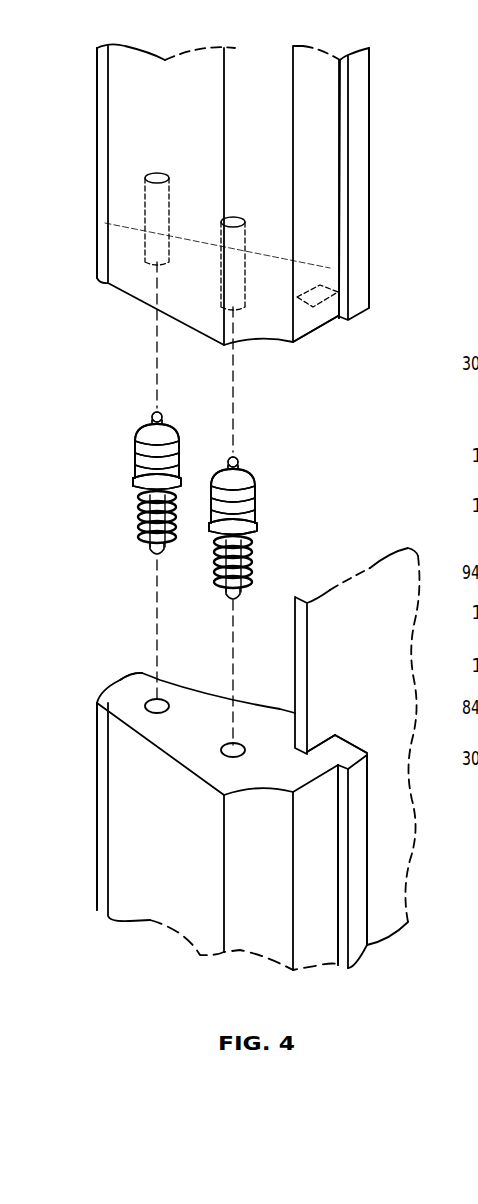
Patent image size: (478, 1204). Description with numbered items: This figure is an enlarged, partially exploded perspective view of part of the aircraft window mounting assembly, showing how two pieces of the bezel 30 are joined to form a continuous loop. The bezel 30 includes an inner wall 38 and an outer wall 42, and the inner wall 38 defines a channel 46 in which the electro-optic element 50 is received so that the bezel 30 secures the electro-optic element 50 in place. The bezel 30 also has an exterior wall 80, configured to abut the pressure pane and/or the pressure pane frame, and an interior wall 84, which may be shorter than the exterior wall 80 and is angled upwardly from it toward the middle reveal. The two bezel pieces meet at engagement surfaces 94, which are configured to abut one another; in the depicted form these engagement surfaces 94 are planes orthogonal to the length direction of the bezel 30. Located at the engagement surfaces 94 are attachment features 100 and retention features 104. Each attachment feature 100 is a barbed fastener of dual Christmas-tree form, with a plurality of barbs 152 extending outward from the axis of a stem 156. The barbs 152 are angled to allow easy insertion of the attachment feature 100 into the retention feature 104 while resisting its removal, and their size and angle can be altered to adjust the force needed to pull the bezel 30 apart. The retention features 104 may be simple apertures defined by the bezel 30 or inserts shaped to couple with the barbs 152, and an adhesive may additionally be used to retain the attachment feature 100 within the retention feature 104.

The bezel 30 is at (95, 157).
The outer wall 42 is at (148, 110).
The exterior wall 80 is at (315, 128).
The engagement surfaces 94 is at (315, 333).
The inner wall 38 is at (260, 255).
The channel 46 is at (317, 290).
The interior wall 84 is at (150, 238).
The retention feature 104 is at (232, 288).
The attachment feature 100 is at (135, 427).
The stem 156 is at (150, 415).
The barbs 152 is at (135, 470).
The electro-optic element 50 is at (397, 623).